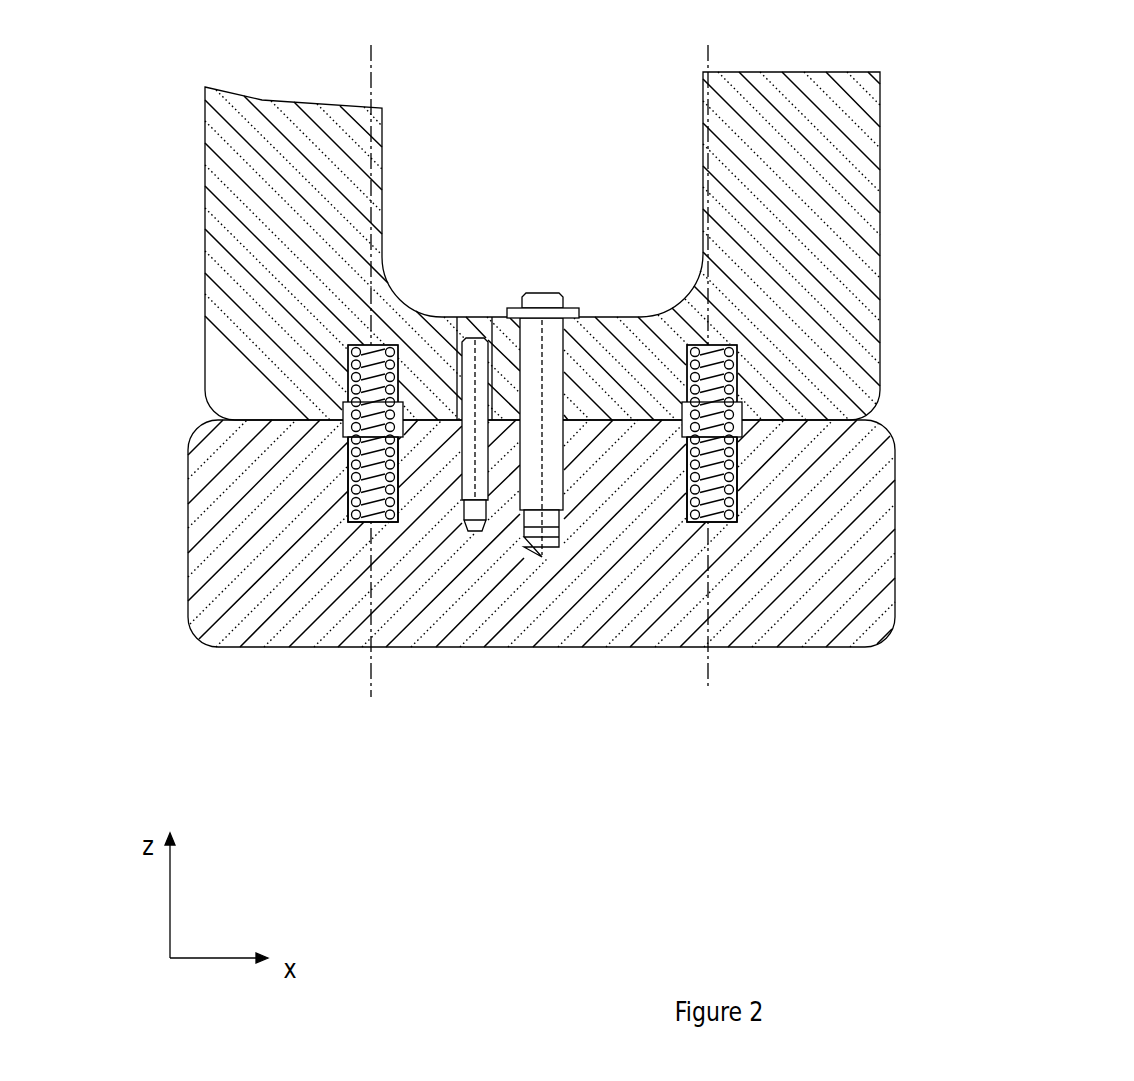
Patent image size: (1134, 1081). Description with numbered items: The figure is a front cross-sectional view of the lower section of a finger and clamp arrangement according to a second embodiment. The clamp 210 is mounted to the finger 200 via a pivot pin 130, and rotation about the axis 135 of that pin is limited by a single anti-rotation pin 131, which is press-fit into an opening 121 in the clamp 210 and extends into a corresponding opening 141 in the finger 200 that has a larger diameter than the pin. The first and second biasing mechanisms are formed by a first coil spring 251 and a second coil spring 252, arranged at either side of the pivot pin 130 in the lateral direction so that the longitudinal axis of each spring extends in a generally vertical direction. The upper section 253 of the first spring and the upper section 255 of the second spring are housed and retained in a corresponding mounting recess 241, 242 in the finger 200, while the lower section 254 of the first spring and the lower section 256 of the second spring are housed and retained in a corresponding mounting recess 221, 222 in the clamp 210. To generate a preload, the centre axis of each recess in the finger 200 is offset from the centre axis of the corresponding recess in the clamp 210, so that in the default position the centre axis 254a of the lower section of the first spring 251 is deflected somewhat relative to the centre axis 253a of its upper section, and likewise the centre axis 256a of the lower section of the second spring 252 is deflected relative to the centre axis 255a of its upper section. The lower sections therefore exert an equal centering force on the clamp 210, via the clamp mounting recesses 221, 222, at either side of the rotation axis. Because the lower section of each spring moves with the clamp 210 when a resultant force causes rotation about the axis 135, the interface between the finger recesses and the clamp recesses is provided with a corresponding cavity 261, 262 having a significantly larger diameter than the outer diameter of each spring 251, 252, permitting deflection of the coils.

The finger 200 is at (827, 155).
The clamp 210 is at (613, 600).
The pivot pin 130 is at (541, 303).
The axis 135 is at (543, 403).
The opening in the finger 141 is at (467, 330).
The anti-rotation pin 131 is at (481, 367).
The opening in the clamp 121 is at (468, 517).
The mounting recess in the finger 241 is at (397, 345).
The mounting recess in the finger 242 is at (763, 342).
The mounting recess in the clamp 221 is at (382, 517).
The mounting recess in the clamp 222 is at (722, 517).
The upper section of the first spring 253 is at (340, 377).
The first coil spring 251 is at (347, 443).
The lower section of the first spring 254 is at (340, 494).
The cavity 261 is at (350, 419).
The upper section of the second spring 255 is at (745, 377).
The second coil spring 252 is at (736, 455).
The lower section of the second spring 256 is at (745, 493).
The cavity 262 is at (737, 411).
The centre axis of the upper section of the first spring 253a is at (370, 140).
The centre axis of the lower section of the first spring 254a is at (372, 660).
The centre axis of the upper section of the second spring 255a is at (709, 170).
The centre axis of the lower section of the second spring 256a is at (710, 657).